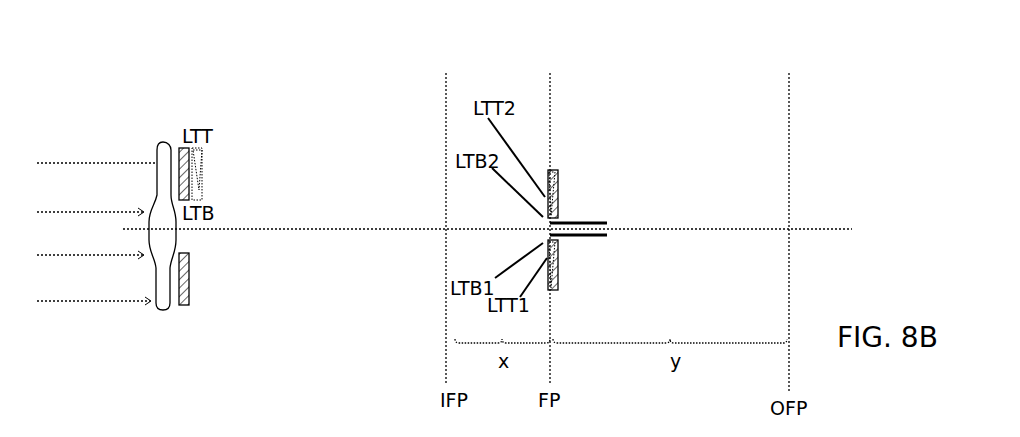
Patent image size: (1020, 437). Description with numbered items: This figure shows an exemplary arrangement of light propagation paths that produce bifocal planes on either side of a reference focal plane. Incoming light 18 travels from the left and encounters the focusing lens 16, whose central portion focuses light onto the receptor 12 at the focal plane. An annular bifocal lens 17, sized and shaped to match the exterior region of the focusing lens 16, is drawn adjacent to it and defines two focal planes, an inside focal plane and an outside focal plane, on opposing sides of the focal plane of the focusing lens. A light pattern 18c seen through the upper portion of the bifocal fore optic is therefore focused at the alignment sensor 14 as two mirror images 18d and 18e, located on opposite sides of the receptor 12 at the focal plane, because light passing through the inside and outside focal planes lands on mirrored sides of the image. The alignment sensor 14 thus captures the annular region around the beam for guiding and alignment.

The incoming light 18 is at (55, 163).
The focusing lens 16 is at (169, 167).
The bifocal lens 17 is at (183, 303).
The light pattern 18c is at (202, 193).
The alignment sensor 14 is at (551, 200).
The focused image 18d is at (552, 202).
The receptor 12 is at (553, 232).
The focused image 18e is at (547, 250).